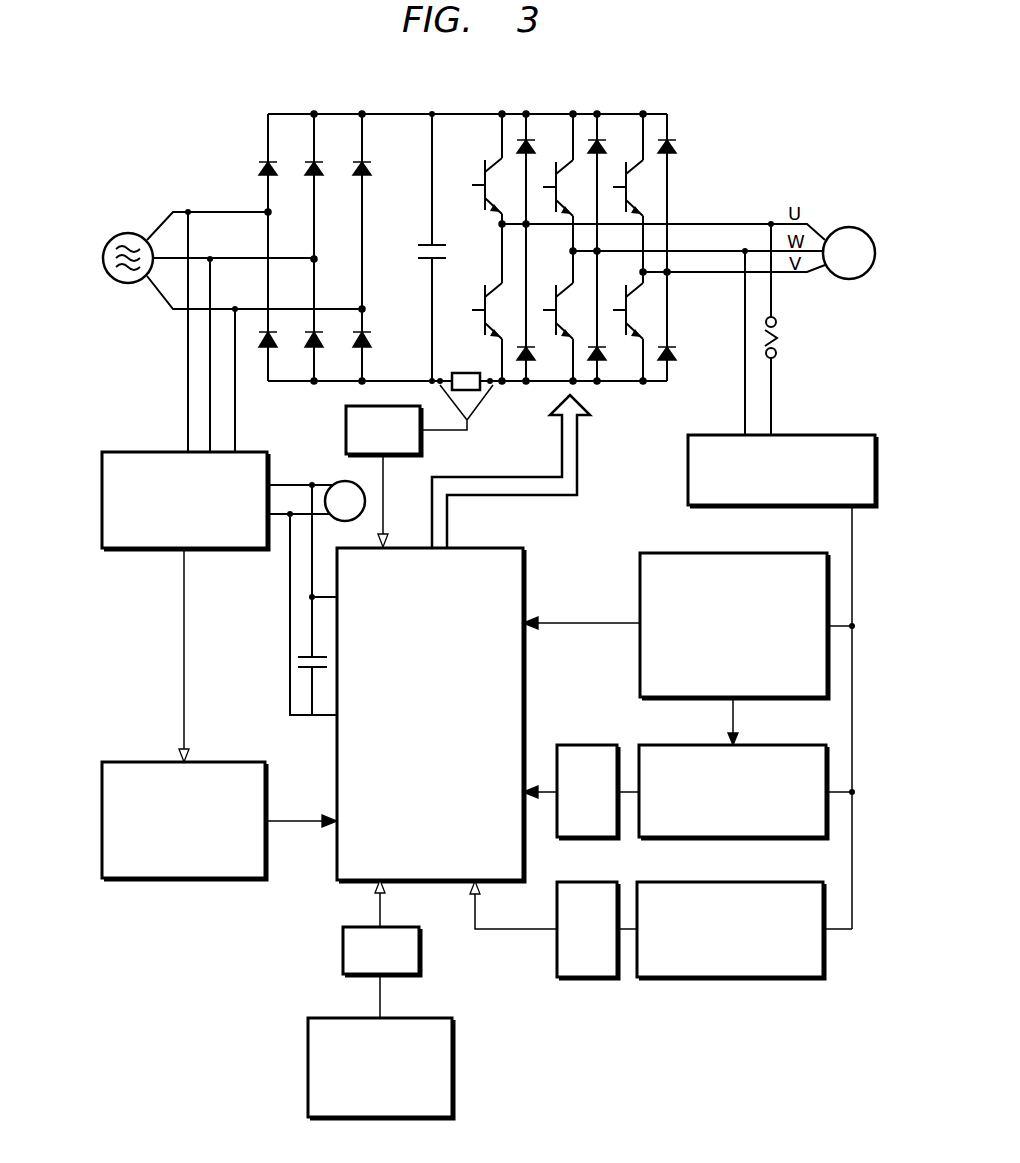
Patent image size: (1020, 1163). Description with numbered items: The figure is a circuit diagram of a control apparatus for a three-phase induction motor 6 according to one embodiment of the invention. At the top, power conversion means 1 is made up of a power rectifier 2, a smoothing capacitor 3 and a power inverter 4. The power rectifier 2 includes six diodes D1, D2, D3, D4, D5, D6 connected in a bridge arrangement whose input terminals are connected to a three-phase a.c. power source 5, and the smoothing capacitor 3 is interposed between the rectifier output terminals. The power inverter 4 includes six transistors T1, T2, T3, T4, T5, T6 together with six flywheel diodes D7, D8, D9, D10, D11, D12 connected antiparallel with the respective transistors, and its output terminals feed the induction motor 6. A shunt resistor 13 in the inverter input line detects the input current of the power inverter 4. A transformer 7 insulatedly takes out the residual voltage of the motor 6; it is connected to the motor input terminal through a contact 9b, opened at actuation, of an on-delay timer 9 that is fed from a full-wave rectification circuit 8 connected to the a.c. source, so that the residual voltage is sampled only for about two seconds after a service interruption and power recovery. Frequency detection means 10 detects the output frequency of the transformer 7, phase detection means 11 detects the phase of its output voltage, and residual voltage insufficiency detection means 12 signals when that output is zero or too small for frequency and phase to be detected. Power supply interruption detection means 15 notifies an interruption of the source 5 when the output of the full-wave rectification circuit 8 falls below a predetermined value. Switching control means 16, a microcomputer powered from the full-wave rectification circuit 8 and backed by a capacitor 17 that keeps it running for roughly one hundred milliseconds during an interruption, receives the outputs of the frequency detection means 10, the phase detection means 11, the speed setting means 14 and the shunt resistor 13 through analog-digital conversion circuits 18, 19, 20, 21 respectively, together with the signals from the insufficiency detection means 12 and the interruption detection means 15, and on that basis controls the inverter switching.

The power conversion means 1 is at (474, 98).
The power rectifier 2 is at (330, 236).
The smoothing capacitor 3 is at (425, 242).
The power inverter 4 is at (578, 236).
The three-phase a.c. power source 5 is at (133, 232).
The three-phase induction motor 6 is at (866, 232).
The transformer 7 is at (840, 435).
The full-wave rectification circuit 8 is at (130, 452).
The on-delay timer 9 is at (316, 490).
The contact 9b is at (784, 337).
The frequency detection means 10 is at (778, 745).
The phase detection means 11 is at (720, 882).
The residual voltage insufficiency detection means 12 is at (745, 553).
The shunt resistor 13 is at (458, 373).
The speed setting means 14 is at (308, 1088).
The power supply interruption detection means 15 is at (145, 878).
The switching control means 16 is at (523, 572).
The capacitor 17 is at (312, 652).
The analog-digital conversion circuit 18 is at (584, 745).
The analog-digital conversion circuit 19 is at (583, 977).
The analog-digital conversion circuit 20 is at (343, 940).
The analog-digital conversion circuit 21 is at (346, 426).
The diode D1 is at (294, 168).
The diode D2 is at (341, 168).
The diode D3 is at (389, 168).
The diode D4 is at (290, 351).
The diode D5 is at (336, 351).
The diode D6 is at (383, 351).
The flywheel diode D7 is at (548, 139).
The flywheel diode D8 is at (619, 139).
The flywheel diode D9 is at (689, 144).
The flywheel diode D10 is at (550, 356).
The flywheel diode D11 is at (620, 356).
The flywheel diode D12 is at (690, 356).
The transistor T1 is at (464, 166).
The transistor T2 is at (536, 199).
The transistor T3 is at (606, 199).
The transistor T4 is at (461, 294).
The transistor T5 is at (536, 294).
The transistor T6 is at (606, 294).